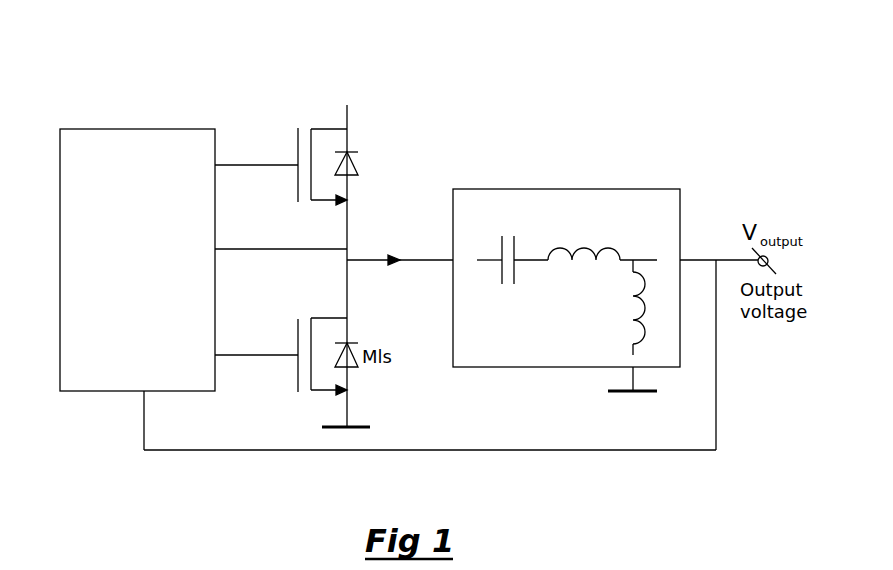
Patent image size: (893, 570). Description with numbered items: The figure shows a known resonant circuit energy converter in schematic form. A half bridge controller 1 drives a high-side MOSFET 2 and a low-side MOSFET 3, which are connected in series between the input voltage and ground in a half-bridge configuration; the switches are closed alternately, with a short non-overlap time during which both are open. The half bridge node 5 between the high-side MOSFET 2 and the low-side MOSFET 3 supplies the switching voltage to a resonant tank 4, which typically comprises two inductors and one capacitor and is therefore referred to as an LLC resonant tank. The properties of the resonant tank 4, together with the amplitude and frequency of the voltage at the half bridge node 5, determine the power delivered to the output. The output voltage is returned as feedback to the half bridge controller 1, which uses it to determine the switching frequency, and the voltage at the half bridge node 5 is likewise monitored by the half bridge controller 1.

The half bridge controller 1 is at (122, 190).
The high-side MOSFET 2 is at (292, 150).
The low-side MOSFET 3 is at (313, 400).
The resonant tank 4 is at (518, 194).
The half bridge node 5 is at (348, 240).